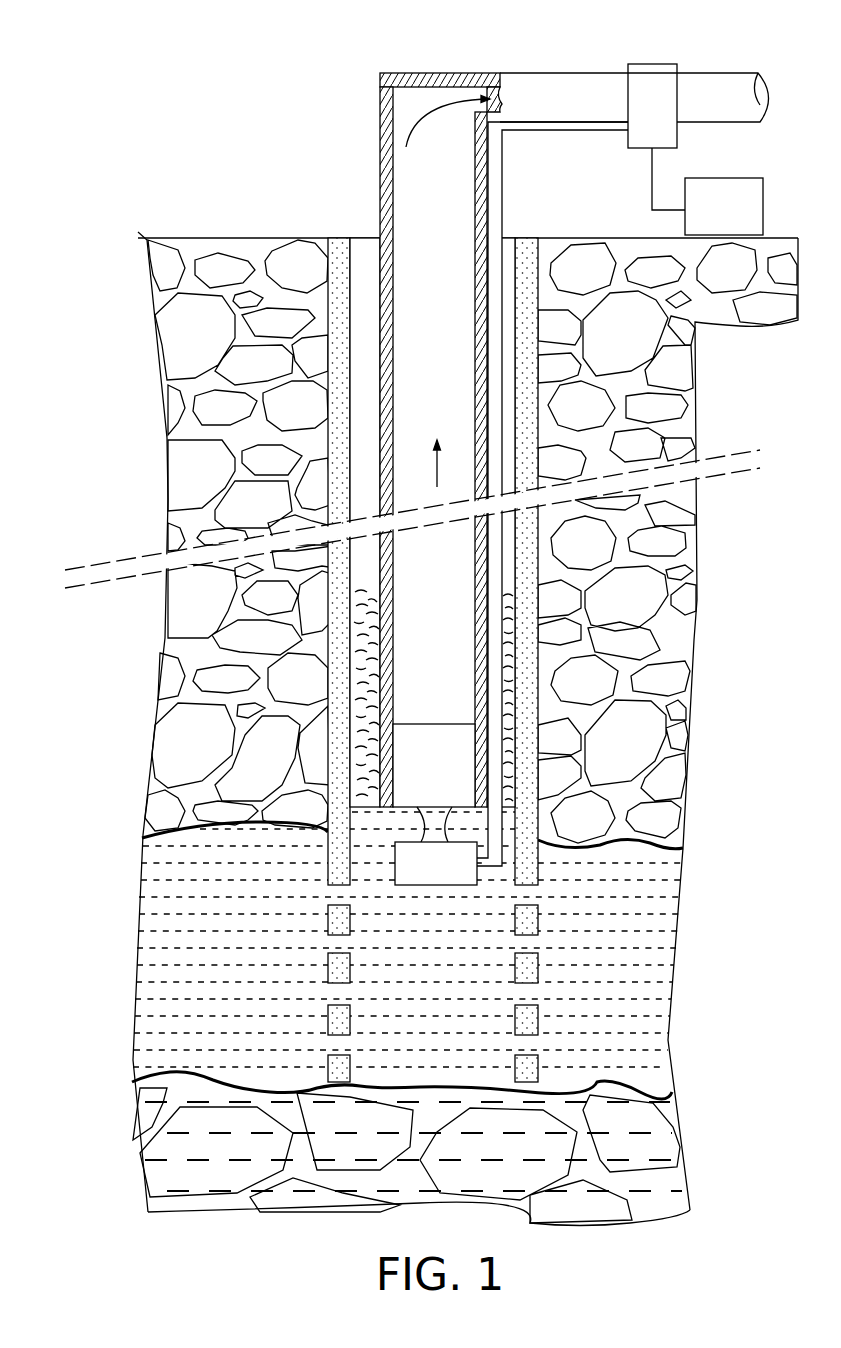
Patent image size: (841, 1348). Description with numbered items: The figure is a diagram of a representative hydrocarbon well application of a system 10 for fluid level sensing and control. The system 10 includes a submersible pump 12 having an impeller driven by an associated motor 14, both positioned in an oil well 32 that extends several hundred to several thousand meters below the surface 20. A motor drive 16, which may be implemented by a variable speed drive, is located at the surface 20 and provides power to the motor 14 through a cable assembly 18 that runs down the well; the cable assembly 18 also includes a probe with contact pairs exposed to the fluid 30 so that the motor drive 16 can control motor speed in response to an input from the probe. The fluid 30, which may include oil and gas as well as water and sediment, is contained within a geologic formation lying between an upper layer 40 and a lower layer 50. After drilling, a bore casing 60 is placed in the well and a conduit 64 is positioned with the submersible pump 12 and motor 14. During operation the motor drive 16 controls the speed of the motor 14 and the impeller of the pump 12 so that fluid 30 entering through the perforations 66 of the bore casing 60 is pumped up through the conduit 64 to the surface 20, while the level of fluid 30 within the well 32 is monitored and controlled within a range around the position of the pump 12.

The system 10 is at (178, 62).
The submersible pump 12 is at (425, 775).
The motor 14 is at (425, 875).
The motor drive 16 is at (765, 210).
The cable assembly 18 is at (650, 185).
The surface 20 is at (231, 233).
The fluid 30 is at (680, 964).
The oil well 32 is at (366, 212).
The layer 40 is at (710, 616).
The layer 50 is at (693, 1137).
The bore casing 60 is at (333, 233).
The conduit 64 is at (379, 130).
The perforations 66 is at (548, 968).